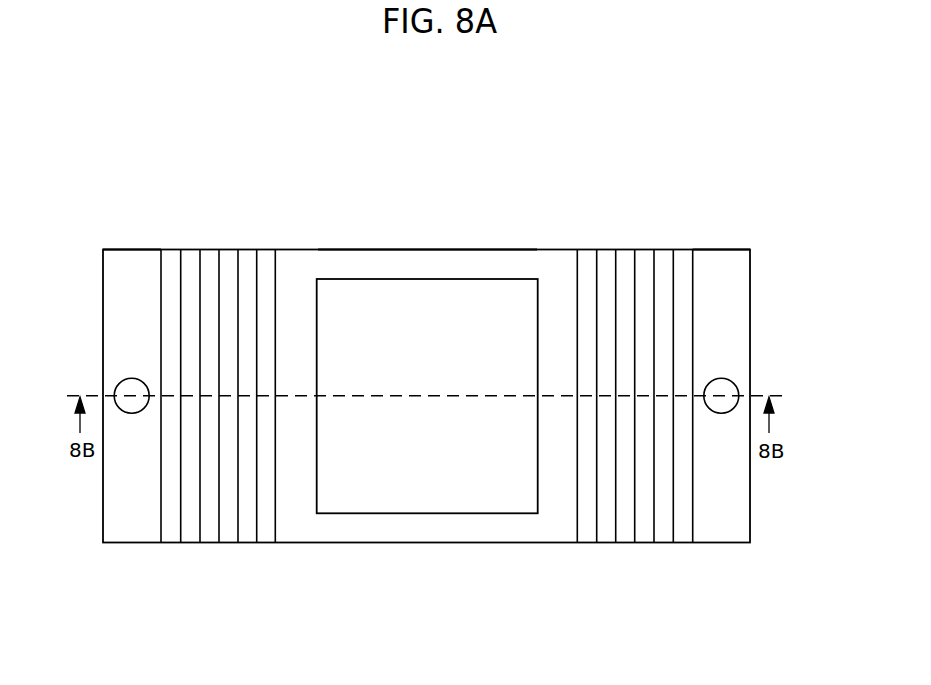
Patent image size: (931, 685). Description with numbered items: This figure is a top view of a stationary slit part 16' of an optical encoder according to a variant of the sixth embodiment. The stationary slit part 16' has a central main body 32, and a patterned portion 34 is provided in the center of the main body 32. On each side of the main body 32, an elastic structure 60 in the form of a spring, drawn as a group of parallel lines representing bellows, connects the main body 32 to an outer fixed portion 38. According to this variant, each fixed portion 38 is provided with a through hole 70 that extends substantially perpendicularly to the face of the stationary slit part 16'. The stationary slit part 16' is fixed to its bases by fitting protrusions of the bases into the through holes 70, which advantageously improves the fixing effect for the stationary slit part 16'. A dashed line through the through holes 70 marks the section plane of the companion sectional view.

The stationary slit part 16' is at (415, 313).
The main body 32 is at (443, 248).
The patterned portion 34 is at (447, 513).
The fixed portion 38 is at (128, 265).
The elastic structure 60 is at (228, 275).
The through hole 70 is at (133, 379).